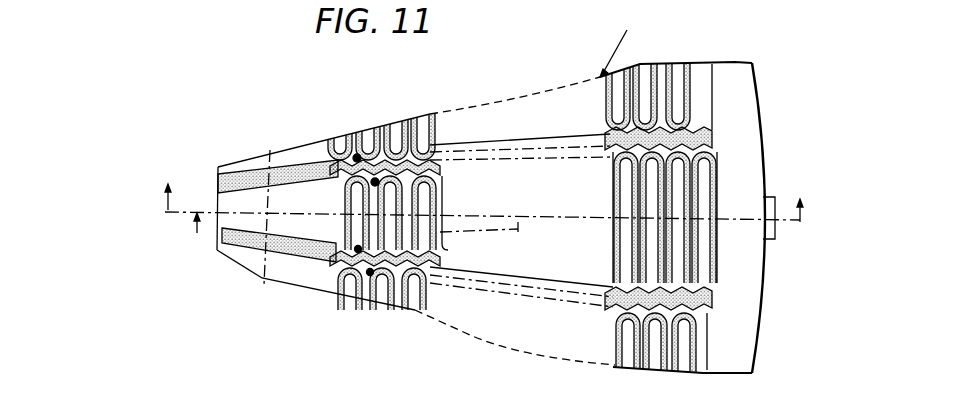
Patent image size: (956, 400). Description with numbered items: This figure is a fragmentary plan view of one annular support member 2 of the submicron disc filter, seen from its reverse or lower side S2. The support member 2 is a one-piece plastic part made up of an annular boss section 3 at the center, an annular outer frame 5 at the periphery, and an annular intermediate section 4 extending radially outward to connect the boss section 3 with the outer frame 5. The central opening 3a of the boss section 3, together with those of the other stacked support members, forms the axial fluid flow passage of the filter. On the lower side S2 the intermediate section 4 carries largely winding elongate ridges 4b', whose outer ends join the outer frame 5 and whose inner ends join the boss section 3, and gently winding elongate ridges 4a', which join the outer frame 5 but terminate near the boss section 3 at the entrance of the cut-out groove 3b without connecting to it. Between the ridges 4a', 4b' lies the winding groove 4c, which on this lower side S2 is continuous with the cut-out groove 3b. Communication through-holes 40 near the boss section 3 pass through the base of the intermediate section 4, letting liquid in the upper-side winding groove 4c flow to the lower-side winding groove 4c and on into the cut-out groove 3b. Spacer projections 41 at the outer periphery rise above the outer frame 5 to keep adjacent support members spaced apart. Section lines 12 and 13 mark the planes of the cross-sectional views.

The support member 2 is at (392, 324).
The boss section 3 is at (242, 203).
The central opening 3a is at (212, 198).
The cut-out groove 3b is at (256, 177).
The intermediate section 4 is at (552, 115).
The gently winding elongate ridge 4a' is at (549, 200).
The largely winding elongate ridge 4b' is at (575, 223).
The winding groove 4c is at (427, 143).
The outer frame 5 is at (740, 143).
The section line 12- 12 is at (490, 189).
The section line 13- 13 is at (361, 230).
The communication through-hole 40 is at (337, 310).
The spacer projection 41 is at (773, 198).
The lower side S2 is at (624, 43).